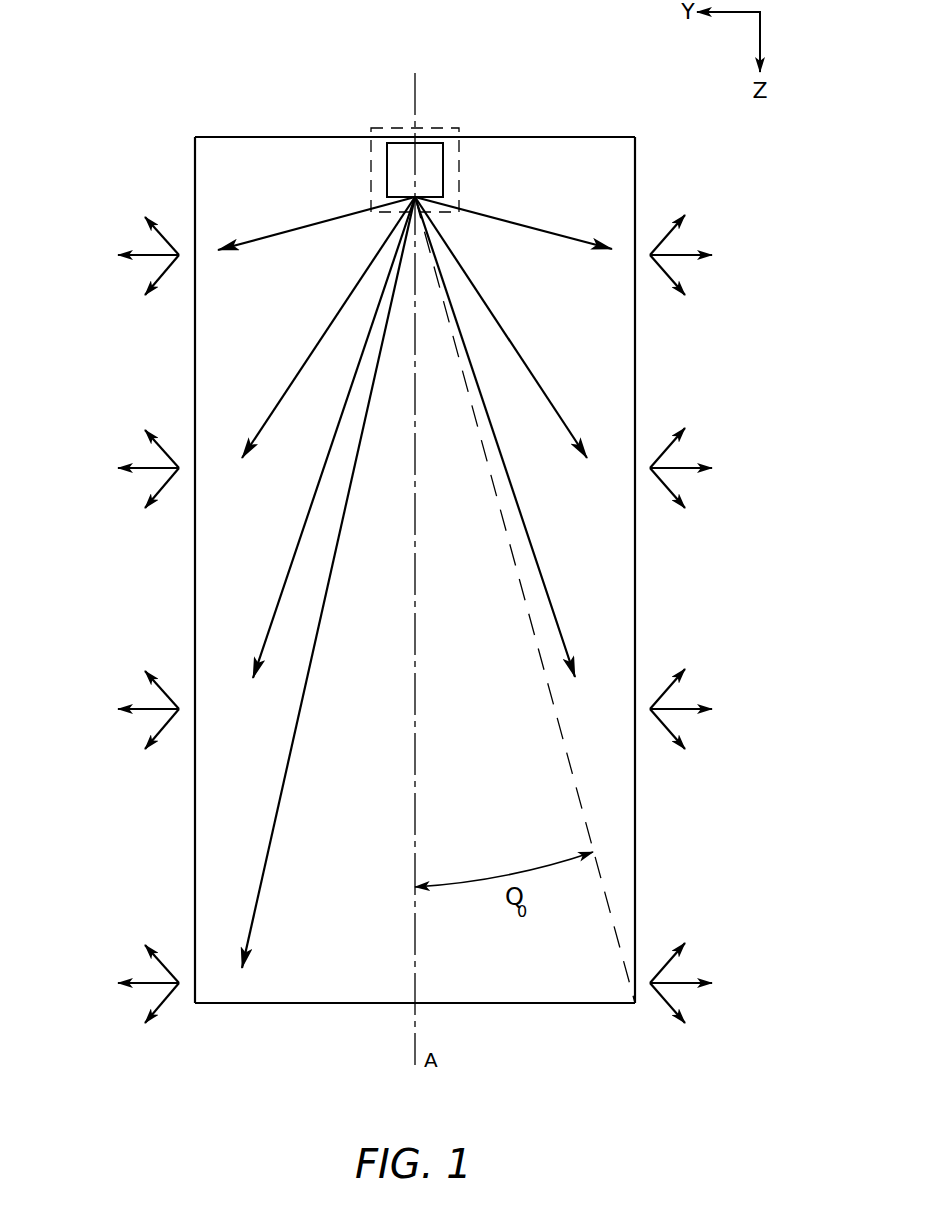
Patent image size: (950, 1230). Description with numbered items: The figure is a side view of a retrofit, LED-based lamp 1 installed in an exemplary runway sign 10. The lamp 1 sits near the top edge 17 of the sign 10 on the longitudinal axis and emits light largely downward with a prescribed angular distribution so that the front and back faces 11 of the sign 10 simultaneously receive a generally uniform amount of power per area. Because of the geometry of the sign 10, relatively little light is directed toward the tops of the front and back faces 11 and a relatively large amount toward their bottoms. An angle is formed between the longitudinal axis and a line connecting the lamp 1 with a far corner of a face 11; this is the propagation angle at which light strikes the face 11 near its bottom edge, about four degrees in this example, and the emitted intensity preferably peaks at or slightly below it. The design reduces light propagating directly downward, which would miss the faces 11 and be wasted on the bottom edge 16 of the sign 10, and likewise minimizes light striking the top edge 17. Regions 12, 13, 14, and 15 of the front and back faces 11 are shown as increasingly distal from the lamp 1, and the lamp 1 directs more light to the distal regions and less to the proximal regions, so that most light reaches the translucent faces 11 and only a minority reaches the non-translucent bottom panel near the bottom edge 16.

The lamp 1 is at (383, 127).
The runway sign 10 is at (224, 76).
The front and back faces 11 is at (195, 153).
The region 12 is at (105, 206).
The region 13 is at (105, 418).
The region 14 is at (105, 660).
The region 15 is at (105, 935).
The bottom edge 16 is at (543, 1003).
The top edge 17 is at (543, 137).